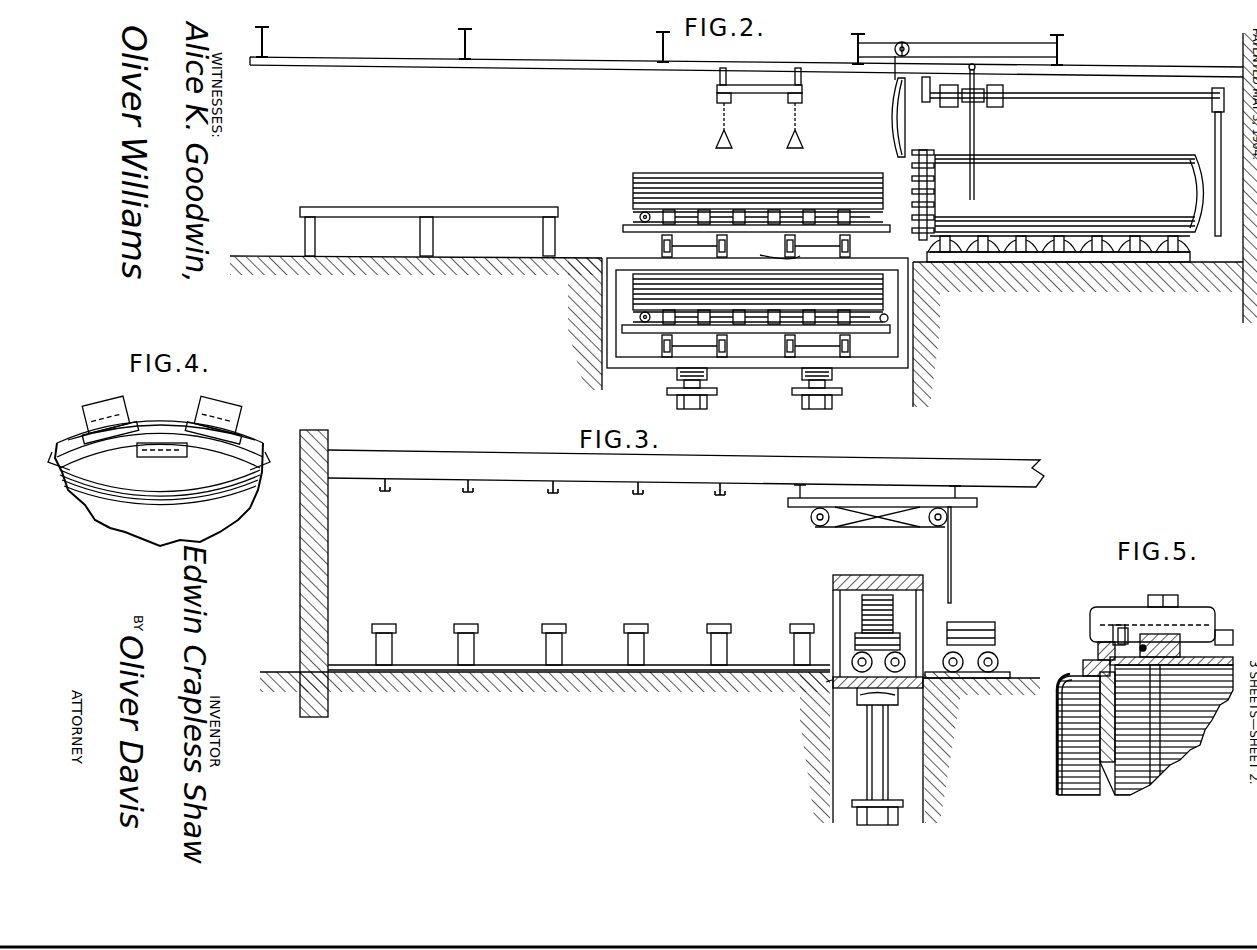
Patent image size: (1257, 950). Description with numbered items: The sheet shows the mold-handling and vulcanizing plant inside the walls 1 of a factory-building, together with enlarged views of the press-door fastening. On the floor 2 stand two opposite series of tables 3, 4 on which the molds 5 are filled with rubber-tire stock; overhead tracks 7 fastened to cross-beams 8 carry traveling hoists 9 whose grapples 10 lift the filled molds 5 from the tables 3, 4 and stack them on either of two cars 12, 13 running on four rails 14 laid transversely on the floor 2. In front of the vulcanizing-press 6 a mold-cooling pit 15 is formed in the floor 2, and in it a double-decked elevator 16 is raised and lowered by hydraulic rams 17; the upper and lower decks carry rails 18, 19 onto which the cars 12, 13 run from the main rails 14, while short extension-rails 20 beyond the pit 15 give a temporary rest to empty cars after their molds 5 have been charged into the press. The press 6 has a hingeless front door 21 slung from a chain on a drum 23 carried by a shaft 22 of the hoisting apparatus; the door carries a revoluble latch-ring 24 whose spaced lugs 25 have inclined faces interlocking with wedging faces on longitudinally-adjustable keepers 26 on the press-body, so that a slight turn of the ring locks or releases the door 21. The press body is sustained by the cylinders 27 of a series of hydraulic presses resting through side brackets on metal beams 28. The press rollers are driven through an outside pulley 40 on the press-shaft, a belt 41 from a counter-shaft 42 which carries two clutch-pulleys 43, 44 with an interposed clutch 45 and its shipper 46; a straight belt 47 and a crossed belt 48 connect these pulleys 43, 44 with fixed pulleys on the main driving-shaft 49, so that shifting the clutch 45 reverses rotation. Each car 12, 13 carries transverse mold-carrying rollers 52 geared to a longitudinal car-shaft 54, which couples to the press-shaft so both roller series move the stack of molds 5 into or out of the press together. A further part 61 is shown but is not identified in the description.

In FIG. 2, the walls 1 is at (1241, 50).
In FIG. 3, the walls 1 is at (310, 578).
In FIG. 2, the floor 2 is at (402, 262).
In FIG. 3, the floor 2 is at (582, 676).
In FIG. 2, the tables 3 is at (454, 210).
In FIG. 3, the tables 4 is at (452, 628).
In FIG. 2, the molds 5 is at (763, 185).
In FIG. 3, the molds 5 is at (870, 612).
In FIG. 2, the vulcanizing-press 6 is at (1069, 193).
In FIG. 4, the vulcanizing-press 6 is at (66, 441).
In FIG. 5, the vulcanizing-press 6 is at (1166, 750).
In FIG. 2, the overhead tracks 7 is at (403, 66).
In FIG. 3, the overhead tracks 7 is at (462, 495).
In FIG. 2, the cross-beams 8 is at (458, 42).
In FIG. 3, the cross-beams 8 is at (450, 462).
In FIG. 2, the traveling hoists 9 is at (759, 95).
In FIG. 2, the grapples 10 is at (714, 140).
In FIG. 2, the car 12 is at (736, 333).
In FIG. 3, the car 12 is at (968, 640).
In FIG. 2, the car 13 is at (660, 232).
In FIG. 3, the car 13 is at (856, 648).
In FIG. 3, the rails 14 is at (500, 666).
In FIG. 2, the mold-cooling pit 15 is at (590, 378).
In FIG. 3, the mold-cooling pit 15 is at (910, 768).
In FIG. 2, the double-decked elevator 16 is at (618, 258).
In FIG. 3, the double-decked elevator 16 is at (918, 640).
In FIG. 2, the hydraulic rams 17 is at (680, 398).
In FIG. 3, the hydraulic rams 17 is at (875, 730).
In FIG. 2, the upper-deck rails 18 is at (756, 245).
In FIG. 3, the upper-deck rails 18 is at (840, 574).
In FIG. 2, the lower-deck rails 19 is at (790, 358).
In FIG. 3, the lower-deck rails 19 is at (826, 682).
In FIG. 3, the extension-rails 20 is at (970, 680).
In FIG. 2, the door 21 is at (890, 116).
In FIG. 4, the door 21 is at (159, 483).
In FIG. 5, the door 21 is at (1056, 756).
In FIG. 2, the shaft 22 is at (909, 46).
In FIG. 2, the drum 23 is at (898, 44).
In FIG. 4, the latch-ring 24 is at (238, 452).
In FIG. 5, the latch-ring 24 is at (1098, 656).
In FIG. 4, the lugs 25 is at (132, 414).
In FIG. 5, the lugs 25 is at (1120, 640).
In FIG. 2, the keepers 26 is at (914, 196).
In FIG. 4, the keepers 26 is at (100, 412).
In FIG. 5, the keepers 26 is at (1100, 616).
In FIG. 2, the cylinders 27 is at (950, 255).
In FIG. 2, the metal beams 28 is at (1062, 258).
In FIG. 2, the pulley 40 is at (1210, 262).
In FIG. 2, the belt 41 is at (1214, 146).
In FIG. 2, the counter-shaft 42 is at (1117, 100).
In FIG. 3, the counter-shaft 42 is at (955, 512).
In FIG. 2, the clutch-pulley 43 is at (950, 108).
In FIG. 2, the clutch-pulley 44 is at (1004, 104).
In FIG. 2, the clutch 45 is at (976, 104).
In FIG. 2, the shipper 46 is at (975, 176).
In FIG. 3, the shipper 46 is at (952, 562).
In FIG. 3, the straight belt 47 is at (890, 528).
In FIG. 3, the crossed belt 48 is at (866, 520).
In FIG. 3, the main driving-shaft 49 is at (810, 520).
In FIG. 2, the mold-carrying rollers 52 is at (685, 213).
In FIG. 2, the car-shaft 54 is at (780, 230).
In FIG. 2, the stop 61 is at (885, 230).